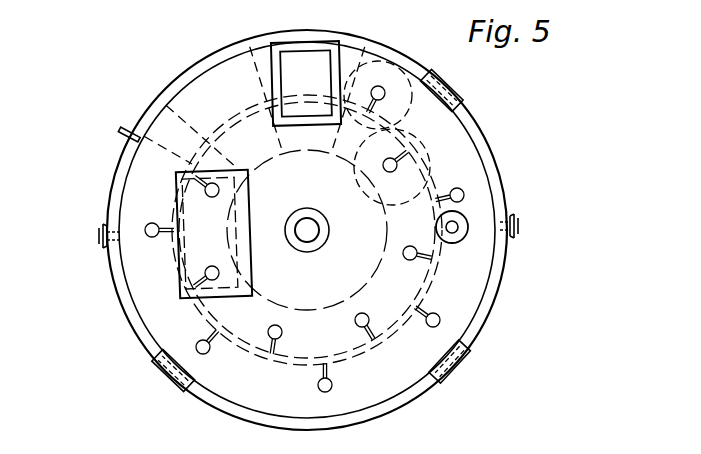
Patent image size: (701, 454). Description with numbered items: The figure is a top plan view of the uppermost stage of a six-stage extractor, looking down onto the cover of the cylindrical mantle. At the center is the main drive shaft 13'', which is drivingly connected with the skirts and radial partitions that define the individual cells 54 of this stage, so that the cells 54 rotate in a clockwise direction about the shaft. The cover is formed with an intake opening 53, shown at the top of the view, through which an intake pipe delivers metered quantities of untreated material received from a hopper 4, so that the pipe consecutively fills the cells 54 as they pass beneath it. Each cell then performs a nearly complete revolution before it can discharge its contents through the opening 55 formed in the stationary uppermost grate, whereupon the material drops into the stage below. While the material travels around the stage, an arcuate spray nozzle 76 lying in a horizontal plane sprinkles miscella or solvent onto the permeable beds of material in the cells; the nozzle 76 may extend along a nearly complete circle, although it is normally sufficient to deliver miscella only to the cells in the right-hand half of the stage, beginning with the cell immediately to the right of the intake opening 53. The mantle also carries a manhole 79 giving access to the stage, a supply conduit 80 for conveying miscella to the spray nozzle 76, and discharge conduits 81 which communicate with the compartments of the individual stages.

The hopper 4 is at (278, 46).
The main drive shaft 13'' is at (324, 221).
The intake opening 53 is at (285, 100).
The cells 54 is at (188, 105).
The opening 55 is at (250, 73).
The arcuate spray nozzle 76 is at (433, 183).
The manhole 79 is at (193, 256).
The supply conduit 80 is at (128, 125).
The discharge conduit 81 is at (99, 246).